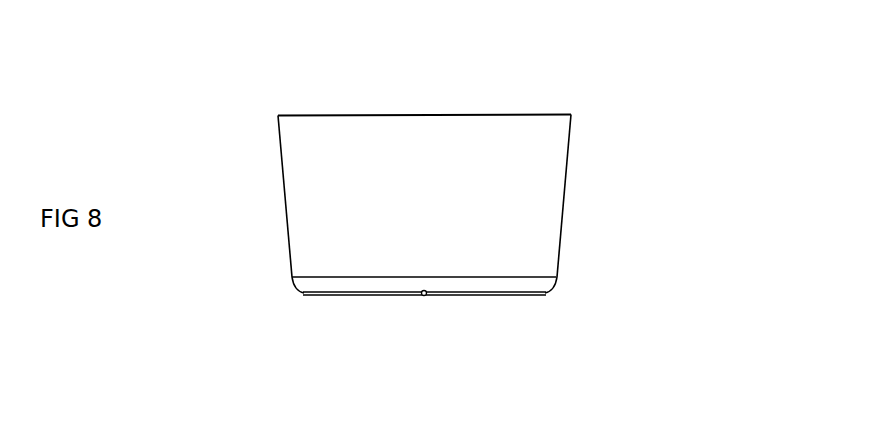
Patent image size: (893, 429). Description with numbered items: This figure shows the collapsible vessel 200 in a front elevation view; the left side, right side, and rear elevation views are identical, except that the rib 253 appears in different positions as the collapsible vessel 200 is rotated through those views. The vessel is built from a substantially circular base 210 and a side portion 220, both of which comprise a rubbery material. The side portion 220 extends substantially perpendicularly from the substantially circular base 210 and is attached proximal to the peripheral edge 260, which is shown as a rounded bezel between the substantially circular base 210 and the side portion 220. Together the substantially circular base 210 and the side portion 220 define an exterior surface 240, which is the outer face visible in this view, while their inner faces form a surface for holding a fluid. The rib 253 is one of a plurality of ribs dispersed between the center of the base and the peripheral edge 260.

The collapsible vessel 200 is at (241, 102).
The substantially circular base 210 is at (327, 283).
The side portion 220 is at (302, 198).
The exterior surface 240 is at (534, 162).
The rib 253 is at (461, 296).
The peripheral edge 260 is at (550, 289).